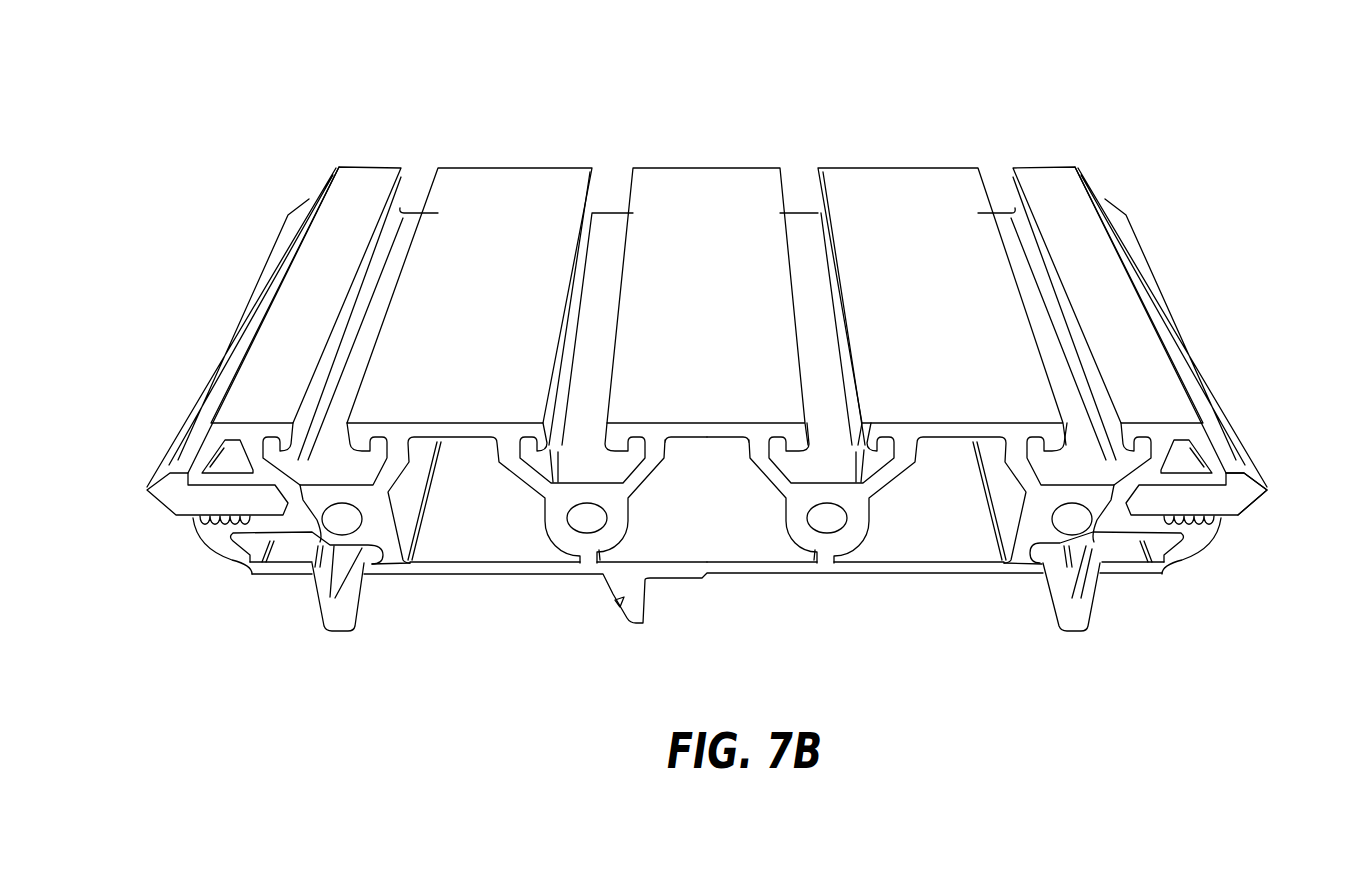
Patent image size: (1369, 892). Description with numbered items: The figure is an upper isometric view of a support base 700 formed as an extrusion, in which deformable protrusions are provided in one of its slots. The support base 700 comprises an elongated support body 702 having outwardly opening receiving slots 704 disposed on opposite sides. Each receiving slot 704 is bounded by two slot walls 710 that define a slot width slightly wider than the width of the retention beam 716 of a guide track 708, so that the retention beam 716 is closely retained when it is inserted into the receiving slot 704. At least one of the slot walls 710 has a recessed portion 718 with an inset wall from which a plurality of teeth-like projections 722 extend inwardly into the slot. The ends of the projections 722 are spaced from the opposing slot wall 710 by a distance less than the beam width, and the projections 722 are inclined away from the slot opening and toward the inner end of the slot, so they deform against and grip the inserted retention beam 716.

The support base 700 is at (524, 92).
The elongated support body 702 is at (718, 168).
The receiving slot 704 is at (283, 497).
The guide track 708 is at (148, 494).
The slot wall 710 is at (1232, 487).
The retention beam 716 is at (273, 518).
The recessed portion 718 is at (1188, 526).
The teeth-like projections 722 is at (228, 527).